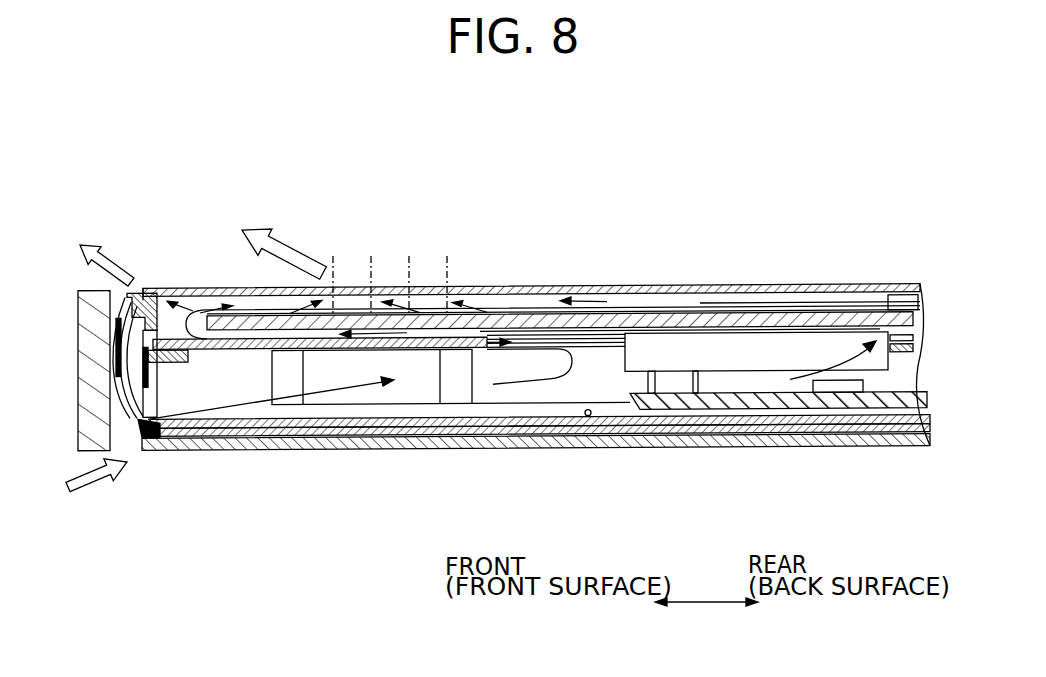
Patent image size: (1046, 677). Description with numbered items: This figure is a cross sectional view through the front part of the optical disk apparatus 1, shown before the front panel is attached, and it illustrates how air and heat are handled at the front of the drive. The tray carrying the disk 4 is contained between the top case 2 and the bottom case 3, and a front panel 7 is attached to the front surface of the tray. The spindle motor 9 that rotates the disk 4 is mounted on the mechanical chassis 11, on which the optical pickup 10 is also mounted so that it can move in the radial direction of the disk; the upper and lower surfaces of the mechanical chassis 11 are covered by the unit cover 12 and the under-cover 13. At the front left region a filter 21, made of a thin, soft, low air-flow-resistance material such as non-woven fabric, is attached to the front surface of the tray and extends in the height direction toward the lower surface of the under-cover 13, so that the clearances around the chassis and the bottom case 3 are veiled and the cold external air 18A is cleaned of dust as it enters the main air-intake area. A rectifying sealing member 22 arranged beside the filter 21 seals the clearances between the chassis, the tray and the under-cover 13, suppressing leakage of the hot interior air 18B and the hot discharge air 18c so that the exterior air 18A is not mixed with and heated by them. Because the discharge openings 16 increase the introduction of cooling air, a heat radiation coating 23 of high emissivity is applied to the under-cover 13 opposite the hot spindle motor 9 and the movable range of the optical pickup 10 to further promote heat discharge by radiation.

The optical disk apparatus 1 is at (515, 203).
The top case 2 is at (628, 285).
The bottom case 3 is at (668, 444).
The disk 4 is at (857, 311).
The front panel 7 is at (125, 443).
The spindle motor 9 is at (650, 357).
The optical pickup 10 is at (423, 370).
The mechanical chassis 11 is at (195, 352).
The unit cover 12 is at (612, 341).
The under-cover 13 is at (918, 447).
The discharge openings 16 is at (475, 244).
The external air 18A is at (92, 478).
The interior air 18B is at (513, 386).
The discharge air 18c is at (290, 247).
The filter 21 is at (132, 445).
The rectifying sealing member 22 is at (137, 440).
The heat radiation coating 23 is at (588, 420).